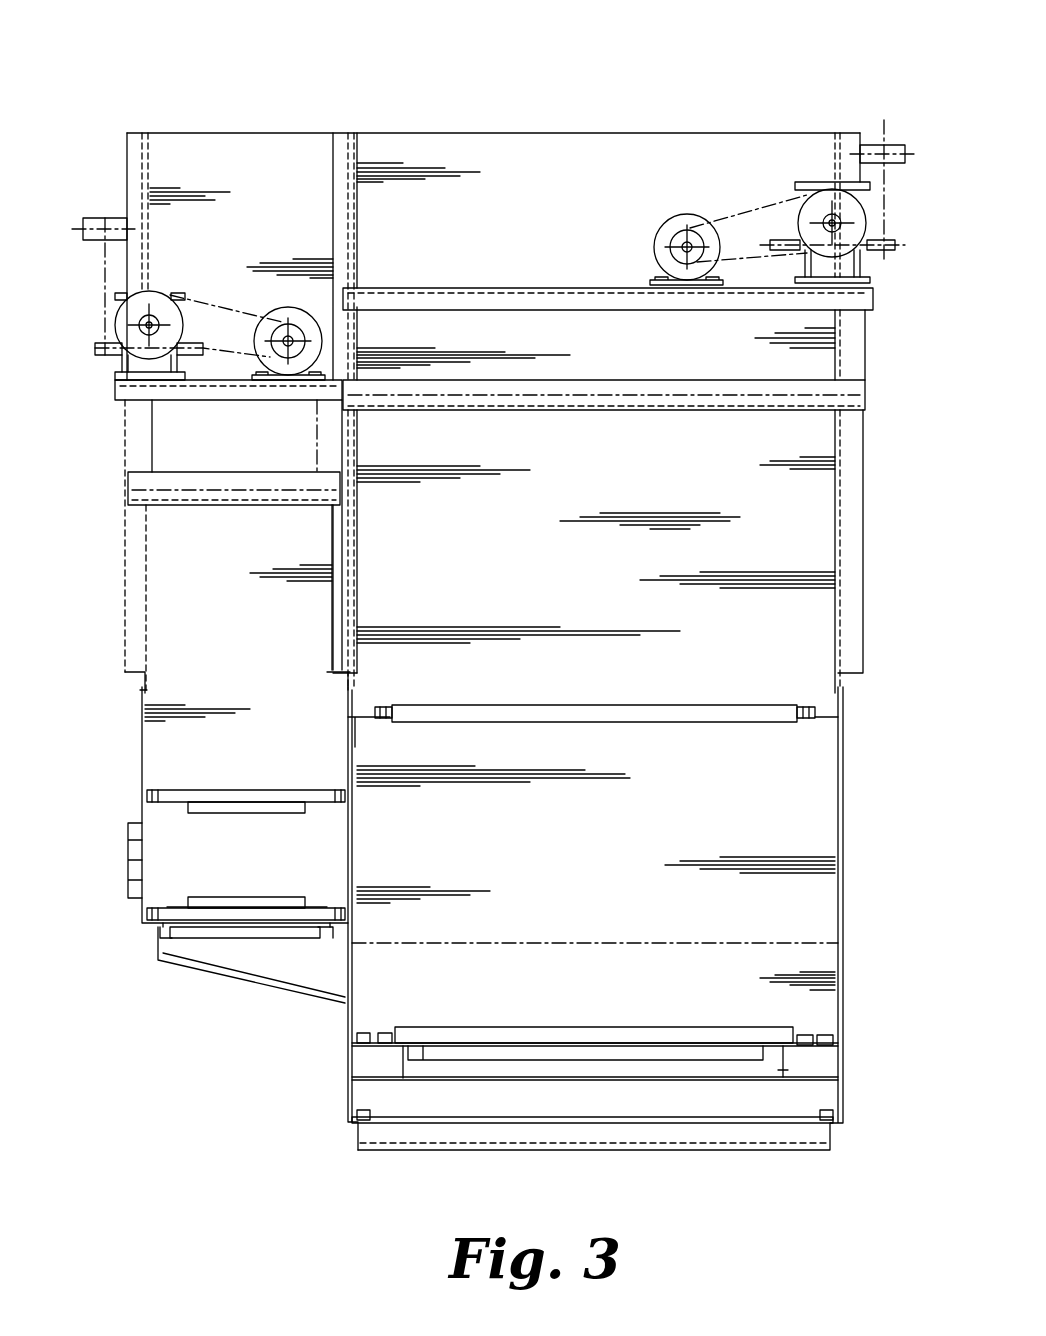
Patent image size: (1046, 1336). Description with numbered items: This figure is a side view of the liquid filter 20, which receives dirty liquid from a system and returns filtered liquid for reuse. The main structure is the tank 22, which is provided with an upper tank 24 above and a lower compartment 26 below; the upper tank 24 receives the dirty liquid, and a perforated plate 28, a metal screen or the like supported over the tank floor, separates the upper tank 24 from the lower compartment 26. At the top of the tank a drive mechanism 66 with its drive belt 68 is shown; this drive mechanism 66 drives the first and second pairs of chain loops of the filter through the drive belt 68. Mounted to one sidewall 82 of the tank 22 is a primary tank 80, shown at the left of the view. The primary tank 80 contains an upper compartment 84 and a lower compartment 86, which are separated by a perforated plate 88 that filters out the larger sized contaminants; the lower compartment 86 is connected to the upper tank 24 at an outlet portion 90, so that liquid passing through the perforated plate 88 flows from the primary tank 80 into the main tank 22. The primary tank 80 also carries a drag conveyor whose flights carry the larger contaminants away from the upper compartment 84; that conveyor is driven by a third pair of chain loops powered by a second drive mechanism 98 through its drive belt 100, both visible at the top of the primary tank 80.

The liquid filter 20 is at (648, 62).
The tank 22 is at (848, 690).
The upper tank 24 is at (797, 833).
The lower compartment 26 is at (823, 1093).
The perforated plate 28 is at (780, 1037).
The drive mechanism 66 is at (862, 215).
The drive belt 68 is at (775, 218).
The primary tank 80 is at (133, 587).
The sidewall 82 is at (348, 717).
The upper compartment 84 is at (177, 845).
The lower compartment 86 is at (255, 960).
The perforated plate 88 is at (200, 932).
The outlet portion 90 is at (345, 972).
The drive mechanism 98 is at (149, 325).
The drive belt 100 is at (230, 308).